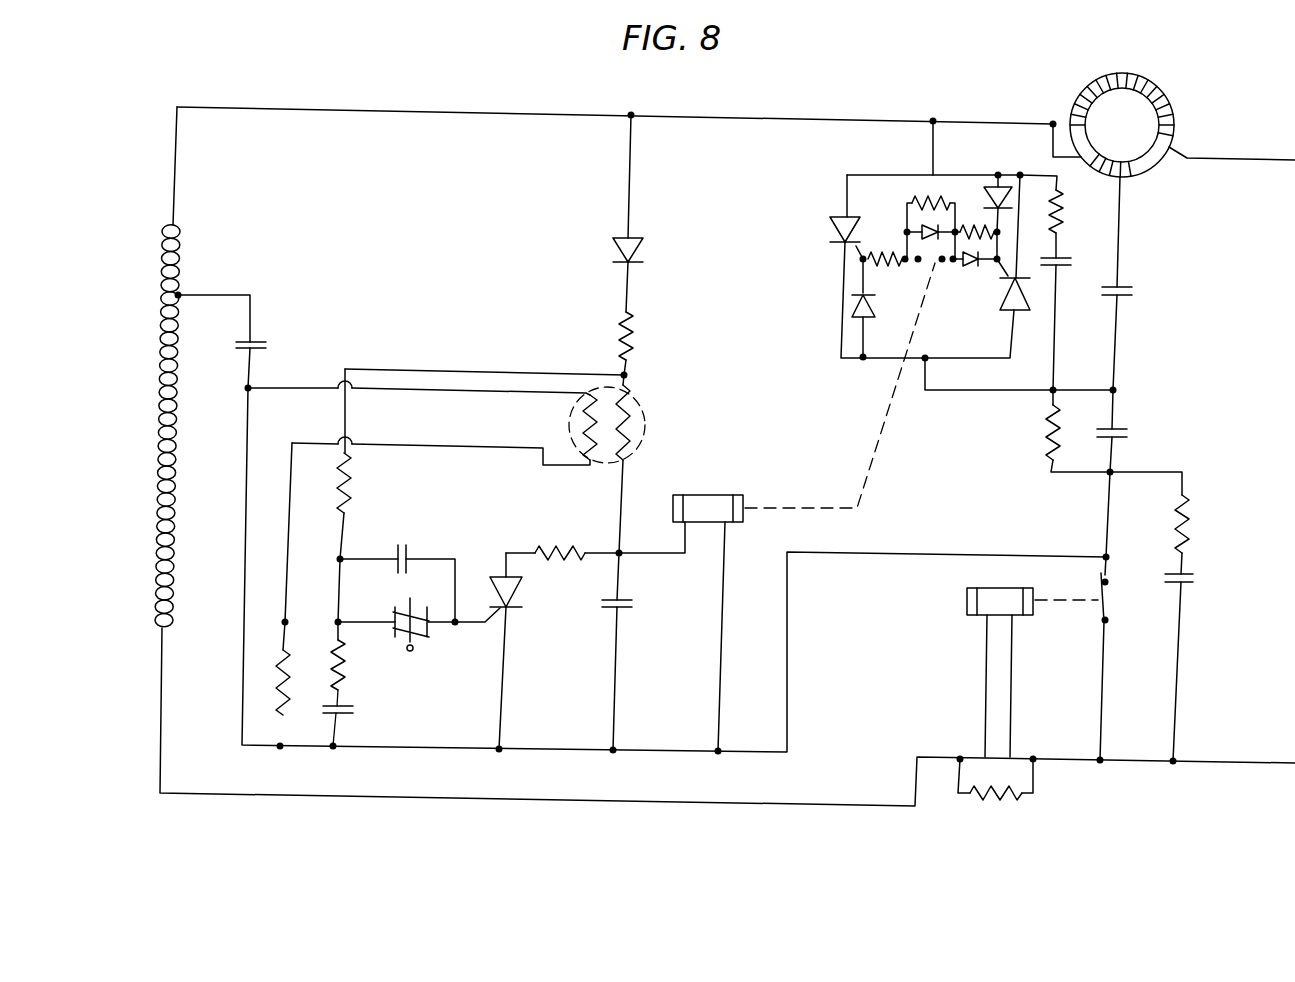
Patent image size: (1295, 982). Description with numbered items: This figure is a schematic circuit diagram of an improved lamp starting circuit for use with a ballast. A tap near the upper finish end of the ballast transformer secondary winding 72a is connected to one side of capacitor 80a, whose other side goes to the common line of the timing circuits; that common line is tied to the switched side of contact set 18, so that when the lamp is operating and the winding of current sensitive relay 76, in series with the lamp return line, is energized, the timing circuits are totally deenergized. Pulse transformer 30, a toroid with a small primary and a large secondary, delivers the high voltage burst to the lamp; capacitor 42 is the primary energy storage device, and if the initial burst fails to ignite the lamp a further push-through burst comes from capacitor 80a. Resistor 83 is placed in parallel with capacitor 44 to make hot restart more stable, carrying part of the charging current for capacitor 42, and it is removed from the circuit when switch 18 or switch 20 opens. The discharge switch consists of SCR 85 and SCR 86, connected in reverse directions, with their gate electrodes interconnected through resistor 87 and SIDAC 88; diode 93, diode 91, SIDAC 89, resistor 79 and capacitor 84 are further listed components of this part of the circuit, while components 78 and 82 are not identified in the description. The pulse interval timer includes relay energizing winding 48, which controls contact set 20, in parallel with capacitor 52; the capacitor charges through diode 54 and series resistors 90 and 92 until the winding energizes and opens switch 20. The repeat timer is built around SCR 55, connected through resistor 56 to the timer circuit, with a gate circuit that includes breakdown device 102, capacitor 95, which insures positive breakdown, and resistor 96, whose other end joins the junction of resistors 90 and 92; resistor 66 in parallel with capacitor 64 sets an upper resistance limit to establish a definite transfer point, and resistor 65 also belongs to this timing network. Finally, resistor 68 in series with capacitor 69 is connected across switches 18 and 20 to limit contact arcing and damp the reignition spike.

The ballast transformer secondary winding 72a is at (201, 426).
The capacitor 80a is at (262, 340).
The resistor 96 is at (350, 483).
The capacitor 95 is at (416, 526).
The resistor 66 is at (288, 665).
The resistor 65 is at (344, 664).
The capacitor 64 is at (346, 716).
The SUS breakdown device 102 is at (413, 648).
The SCR 55 is at (518, 590).
The resistor 56 is at (556, 548).
The capacitor 52 is at (606, 610).
The semiconductor diode 54 is at (614, 248).
The resistor 90 is at (633, 322).
The resistor 92 is at (636, 400).
The energizing winding 48 is at (682, 479).
The switch 20 is at (930, 266).
The SCR 85 is at (825, 222).
The resistor 87 is at (888, 268).
The diode 91 is at (852, 308).
The resistor 78 is at (932, 201).
The SIDAC 89 is at (926, 243).
The resistor 82 is at (976, 227).
The SIDAC 88 is at (965, 266).
The diode 93 is at (1000, 182).
The SCR 86 is at (1027, 312).
The pulse transformer 30 is at (1202, 102).
The resistor 79 is at (1064, 210).
The capacitor 84 is at (1062, 255).
The capacitor 42 is at (1128, 284).
The capacitor 44 is at (1124, 426).
The resistor 83 is at (1044, 435).
The resistor 68 is at (1188, 522).
The capacitor 69 is at (1188, 577).
The current sensitive relay 76 is at (966, 600).
The switch 18 is at (1104, 604).